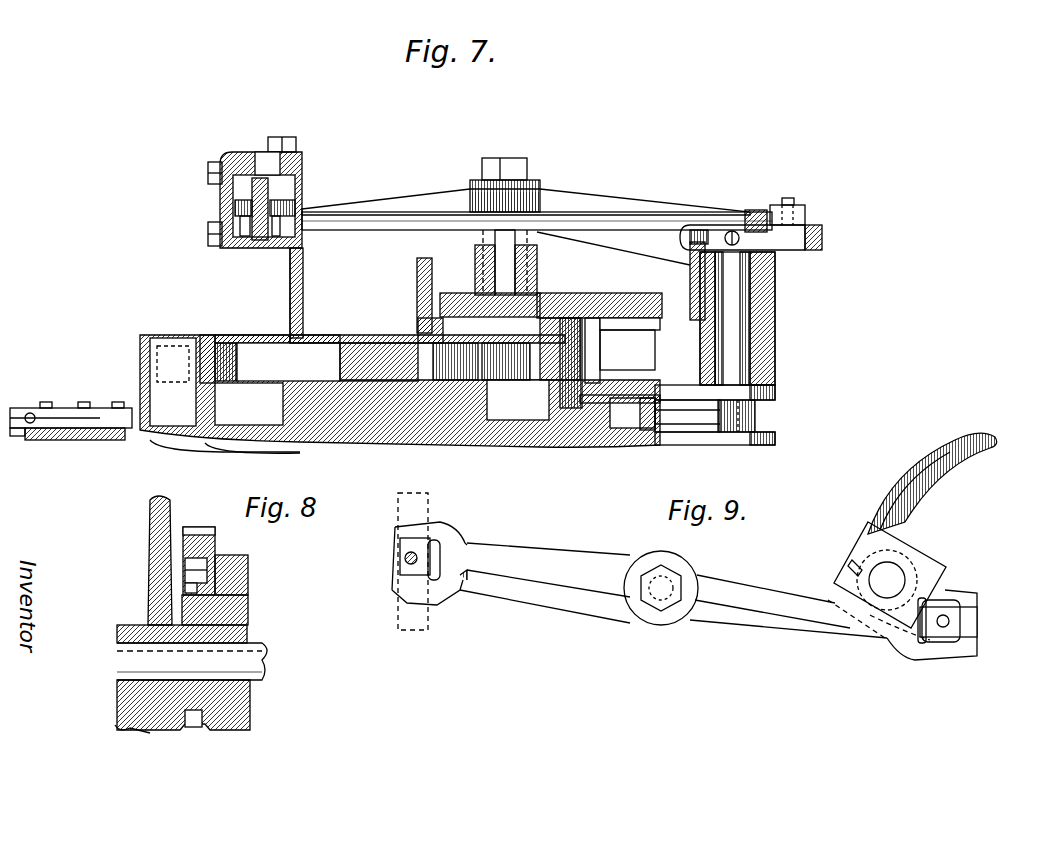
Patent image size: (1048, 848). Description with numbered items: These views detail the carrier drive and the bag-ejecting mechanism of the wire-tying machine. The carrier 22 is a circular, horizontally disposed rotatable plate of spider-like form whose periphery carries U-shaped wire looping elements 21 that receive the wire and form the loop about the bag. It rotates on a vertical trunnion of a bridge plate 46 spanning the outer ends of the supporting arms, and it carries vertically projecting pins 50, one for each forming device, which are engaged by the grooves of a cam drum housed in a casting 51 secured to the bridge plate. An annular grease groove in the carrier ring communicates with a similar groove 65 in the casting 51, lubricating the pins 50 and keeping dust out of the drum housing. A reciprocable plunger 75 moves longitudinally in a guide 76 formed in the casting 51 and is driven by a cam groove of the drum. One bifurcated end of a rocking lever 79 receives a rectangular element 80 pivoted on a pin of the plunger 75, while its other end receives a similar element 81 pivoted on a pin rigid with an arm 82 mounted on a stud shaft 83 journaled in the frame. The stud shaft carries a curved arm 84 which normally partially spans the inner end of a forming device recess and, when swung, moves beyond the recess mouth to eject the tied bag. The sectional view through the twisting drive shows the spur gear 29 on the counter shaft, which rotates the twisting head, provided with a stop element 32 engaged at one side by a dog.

In FIG. 7, the wire looping element 21 is at (35, 413).
In FIG. 7, the carrier 22 is at (302, 440).
In FIG. 7, the bridge plate 46 is at (398, 430).
In FIG. 7, the pin 50 is at (243, 358).
In FIG. 7, the casting 51 is at (290, 290).
In FIG. 7, the groove 65 is at (255, 345).
In FIG. 7, the plunger 75 is at (222, 198).
In FIG. 7, the guide 76 is at (298, 165).
In FIG. 7, the rocking lever 79 is at (392, 204).
In FIG. 9, the rocking lever 79 is at (572, 597).
In FIG. 7, the rectangular element 80 is at (247, 240).
In FIG. 9, the rectangular element 80 is at (396, 570).
In FIG. 7, the element 81 is at (802, 214).
In FIG. 9, the element 81 is at (957, 627).
In FIG. 7, the arm 82 is at (823, 238).
In FIG. 9, the arm 82 is at (912, 586).
In FIG. 7, the stud shaft 83 is at (735, 292).
In FIG. 9, the stud shaft 83 is at (895, 578).
In FIG. 7, the curved arm 84 is at (672, 388).
In FIG. 9, the curved arm 84 is at (930, 486).
In FIG. 8, the spur gear 29 is at (205, 536).
In FIG. 8, the stop element 32 is at (250, 570).